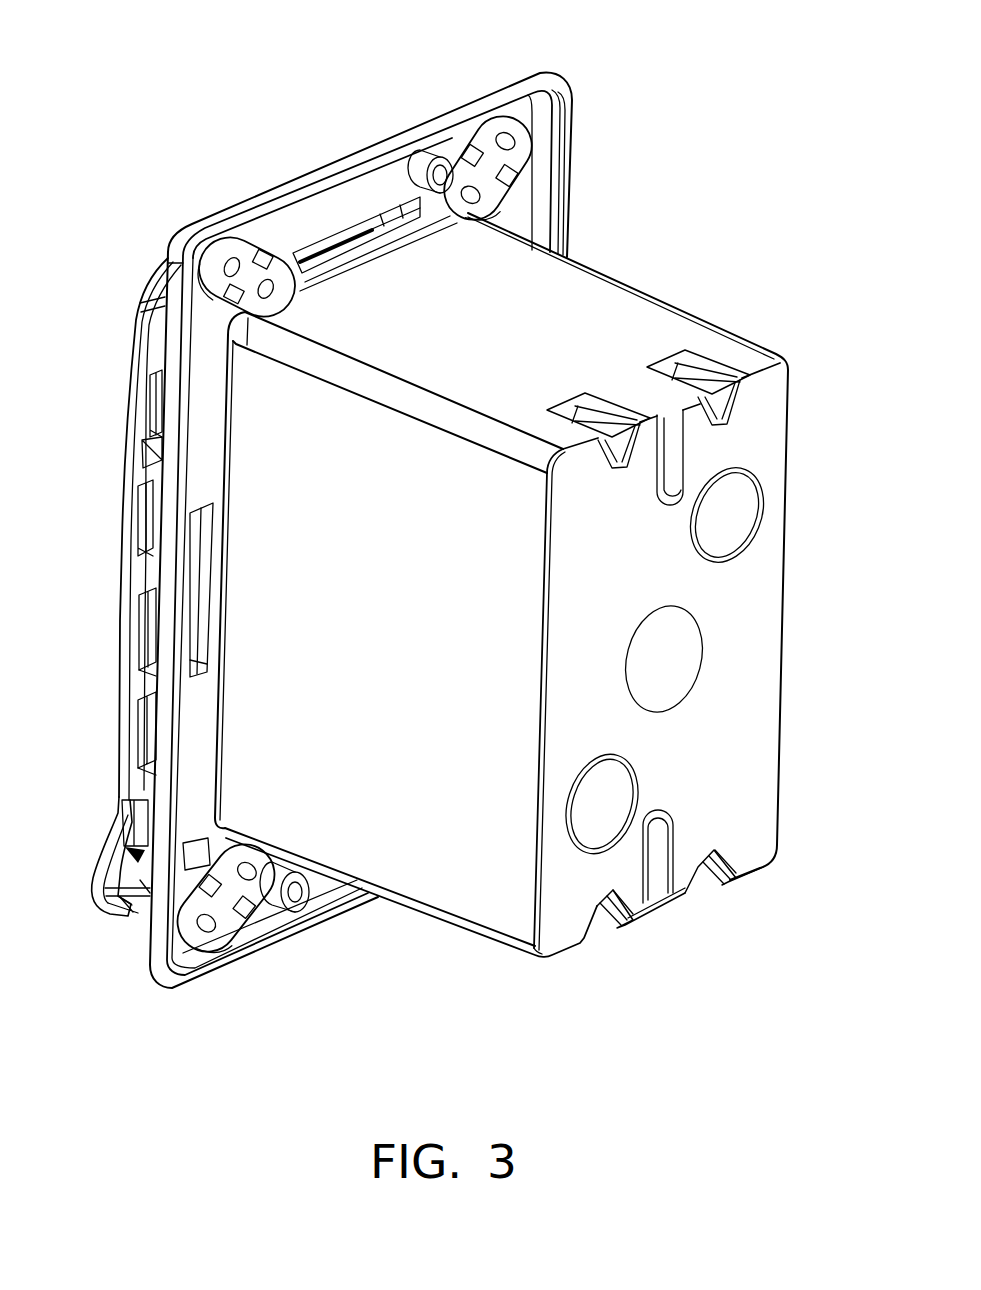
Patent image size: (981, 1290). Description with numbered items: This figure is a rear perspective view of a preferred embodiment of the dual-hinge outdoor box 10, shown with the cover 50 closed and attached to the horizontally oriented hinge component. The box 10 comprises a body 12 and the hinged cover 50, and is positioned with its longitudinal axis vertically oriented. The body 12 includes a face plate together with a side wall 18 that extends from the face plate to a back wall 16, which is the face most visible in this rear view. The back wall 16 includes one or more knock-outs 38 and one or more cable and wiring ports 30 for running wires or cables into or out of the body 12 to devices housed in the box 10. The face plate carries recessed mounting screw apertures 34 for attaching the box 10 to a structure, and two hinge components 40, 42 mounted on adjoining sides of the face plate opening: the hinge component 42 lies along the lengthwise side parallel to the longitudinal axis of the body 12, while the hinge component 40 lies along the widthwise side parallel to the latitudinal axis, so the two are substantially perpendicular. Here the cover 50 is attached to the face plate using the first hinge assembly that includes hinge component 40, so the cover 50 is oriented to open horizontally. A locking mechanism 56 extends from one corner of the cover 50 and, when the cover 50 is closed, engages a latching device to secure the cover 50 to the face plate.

The dual-hinge outdoor box 10 is at (300, 123).
The body 12 is at (622, 252).
The back wall 16 is at (630, 557).
The side wall 18 is at (340, 509).
The cable entry ports 30 is at (703, 383).
The mounting screw apertures 34 is at (211, 947).
The knock-outs 38 is at (598, 805).
The hinge component 40 is at (357, 228).
The hinge component 42 is at (204, 625).
The cover 50 is at (96, 518).
The locking mechanism 56 is at (112, 903).